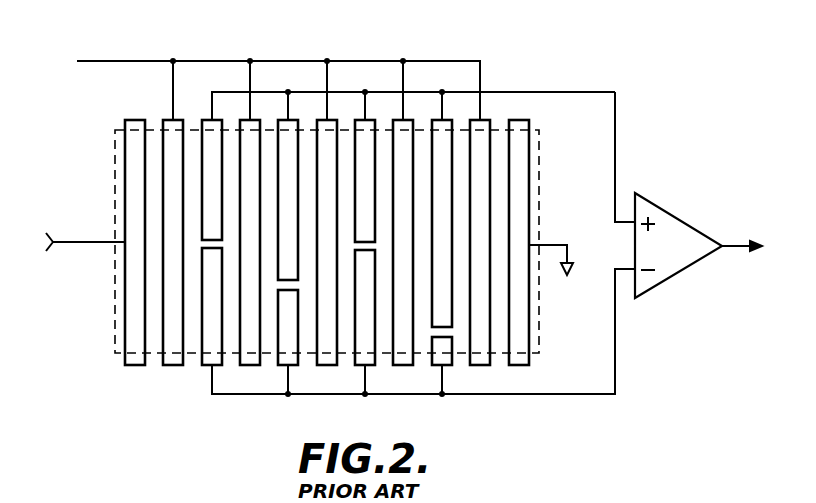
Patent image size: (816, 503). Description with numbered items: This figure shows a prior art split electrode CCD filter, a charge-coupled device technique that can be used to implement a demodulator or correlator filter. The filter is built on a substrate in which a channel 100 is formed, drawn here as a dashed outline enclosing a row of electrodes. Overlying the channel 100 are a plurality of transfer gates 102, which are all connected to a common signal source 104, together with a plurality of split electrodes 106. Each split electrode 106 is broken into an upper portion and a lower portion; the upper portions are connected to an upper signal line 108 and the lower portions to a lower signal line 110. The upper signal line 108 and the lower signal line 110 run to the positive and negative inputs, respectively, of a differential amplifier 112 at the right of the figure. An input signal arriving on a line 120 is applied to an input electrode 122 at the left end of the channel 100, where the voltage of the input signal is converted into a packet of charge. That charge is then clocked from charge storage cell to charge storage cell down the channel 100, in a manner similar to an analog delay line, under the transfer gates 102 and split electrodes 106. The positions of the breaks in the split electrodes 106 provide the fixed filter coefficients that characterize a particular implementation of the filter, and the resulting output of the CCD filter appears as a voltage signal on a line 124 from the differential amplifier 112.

The channel 100 is at (115, 293).
The transfer gates 102 is at (165, 119).
The common signal source 104 is at (355, 61).
The split electrodes 106 is at (193, 108).
The upper signal line 108 is at (605, 92).
The lower signal line 110 is at (615, 370).
The differential amplifier 112 is at (680, 218).
The input signal line 120 is at (80, 242).
The input electrode 122 is at (120, 337).
The output line 124 is at (730, 250).